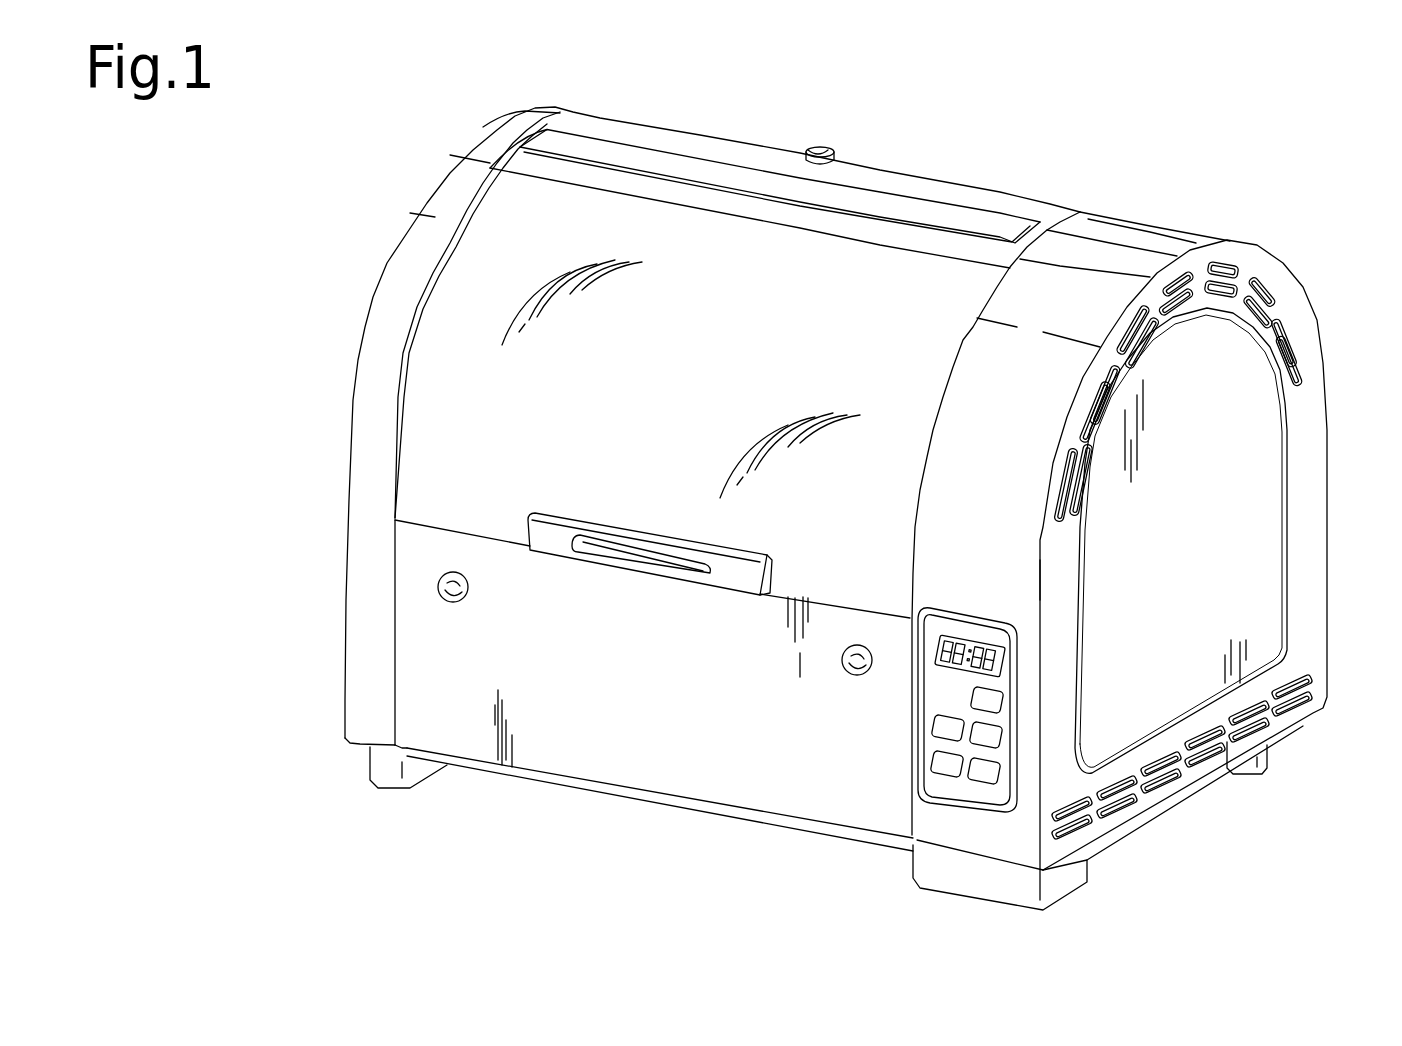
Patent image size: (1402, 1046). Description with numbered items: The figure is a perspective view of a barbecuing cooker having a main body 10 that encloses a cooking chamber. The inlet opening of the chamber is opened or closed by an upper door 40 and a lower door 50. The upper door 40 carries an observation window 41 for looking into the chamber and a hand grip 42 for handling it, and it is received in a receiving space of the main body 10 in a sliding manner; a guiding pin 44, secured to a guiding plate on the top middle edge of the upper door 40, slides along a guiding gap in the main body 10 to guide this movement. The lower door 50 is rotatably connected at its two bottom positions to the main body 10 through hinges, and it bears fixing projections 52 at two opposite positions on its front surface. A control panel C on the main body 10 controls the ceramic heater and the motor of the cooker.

The main body 10 is at (869, 508).
The upper door 40 is at (580, 365).
The observation window 41 is at (443, 315).
The hand grip 42 is at (638, 555).
The guiding pin 44 is at (828, 148).
The lower door 50 is at (579, 685).
The fixing projections 52 is at (440, 580).
The control panel C is at (1065, 729).